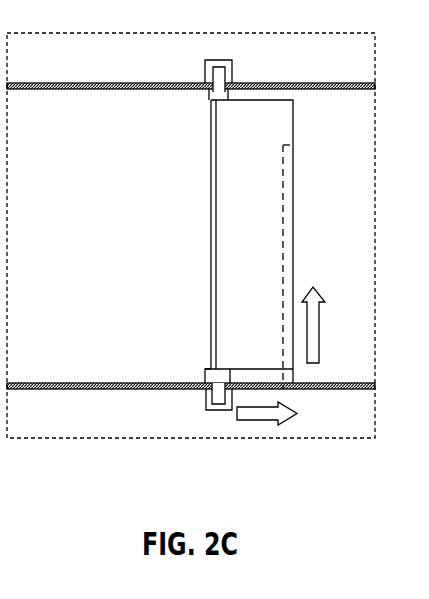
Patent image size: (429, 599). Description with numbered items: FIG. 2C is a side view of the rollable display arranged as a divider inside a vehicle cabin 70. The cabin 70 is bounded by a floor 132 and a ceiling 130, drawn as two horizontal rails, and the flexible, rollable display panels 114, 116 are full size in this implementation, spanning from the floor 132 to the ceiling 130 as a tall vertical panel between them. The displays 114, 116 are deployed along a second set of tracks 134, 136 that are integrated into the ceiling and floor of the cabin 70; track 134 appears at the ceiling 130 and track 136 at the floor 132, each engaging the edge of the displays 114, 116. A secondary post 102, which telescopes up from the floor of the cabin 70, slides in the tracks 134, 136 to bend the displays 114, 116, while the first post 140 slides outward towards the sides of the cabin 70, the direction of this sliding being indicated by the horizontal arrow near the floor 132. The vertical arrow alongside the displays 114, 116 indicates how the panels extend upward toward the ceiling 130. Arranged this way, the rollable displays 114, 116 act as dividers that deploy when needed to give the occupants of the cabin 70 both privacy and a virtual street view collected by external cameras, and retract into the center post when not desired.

The cabin 70 is at (348, 292).
The secondary post 102 is at (215, 411).
The display panel 114 is at (283, 243).
The display panel 116 is at (281, 127).
The ceiling 130 is at (122, 390).
The floor 132 is at (113, 83).
The track 134 is at (233, 70).
The track 136 is at (203, 400).
The first post 140 is at (290, 390).